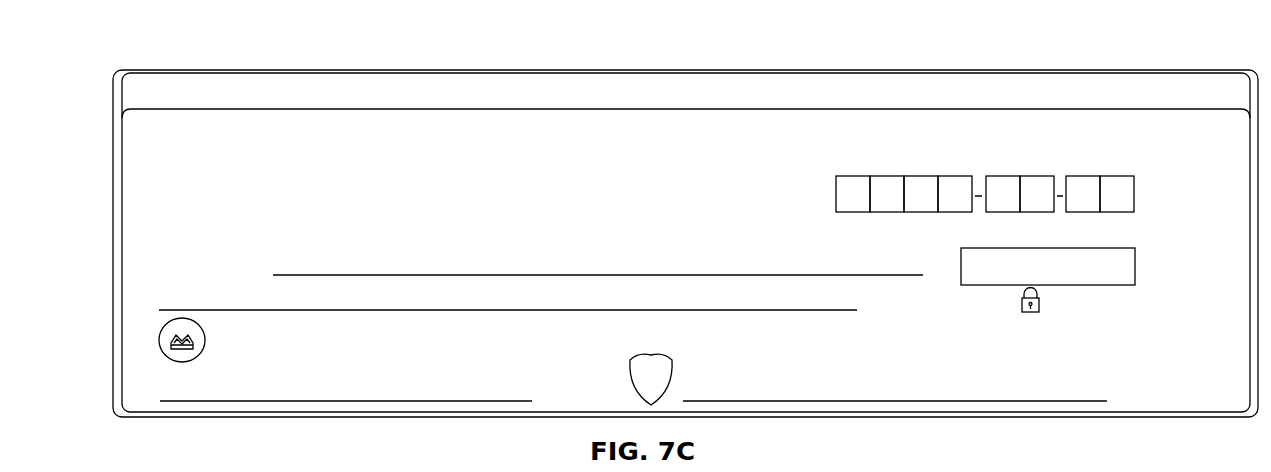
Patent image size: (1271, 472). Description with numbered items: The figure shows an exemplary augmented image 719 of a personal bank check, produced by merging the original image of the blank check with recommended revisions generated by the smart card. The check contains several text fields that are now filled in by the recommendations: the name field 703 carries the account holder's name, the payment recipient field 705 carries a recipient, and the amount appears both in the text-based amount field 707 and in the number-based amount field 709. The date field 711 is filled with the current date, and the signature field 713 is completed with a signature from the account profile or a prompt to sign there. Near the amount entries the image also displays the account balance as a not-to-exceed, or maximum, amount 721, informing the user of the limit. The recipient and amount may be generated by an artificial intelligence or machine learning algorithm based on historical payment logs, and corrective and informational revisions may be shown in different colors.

The augmented image 719 is at (181, 70).
The name field 703 is at (202, 147).
The payment recipient field 705 is at (323, 240).
The text-based amount field 707 is at (782, 297).
The number-based amount field 709 is at (1135, 265).
The date field 711 is at (923, 176).
The signature field 713 is at (1083, 393).
The maximum amount 721 is at (992, 325).